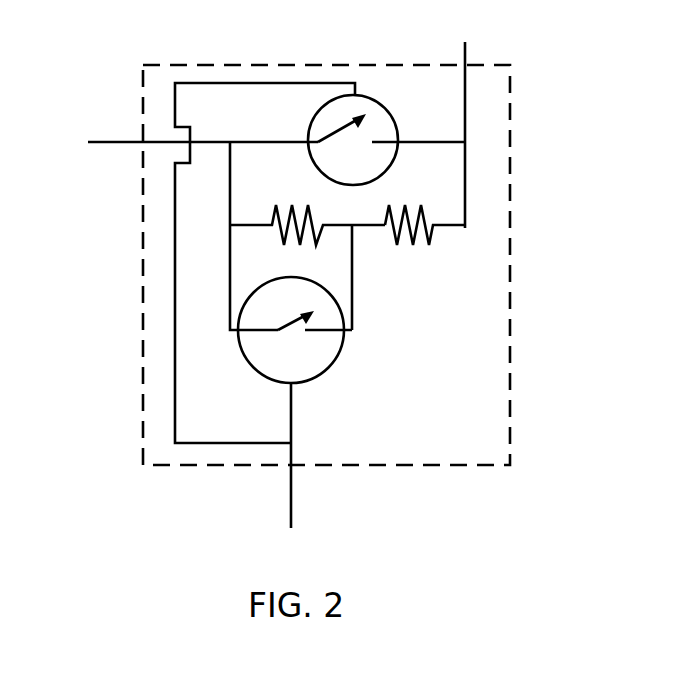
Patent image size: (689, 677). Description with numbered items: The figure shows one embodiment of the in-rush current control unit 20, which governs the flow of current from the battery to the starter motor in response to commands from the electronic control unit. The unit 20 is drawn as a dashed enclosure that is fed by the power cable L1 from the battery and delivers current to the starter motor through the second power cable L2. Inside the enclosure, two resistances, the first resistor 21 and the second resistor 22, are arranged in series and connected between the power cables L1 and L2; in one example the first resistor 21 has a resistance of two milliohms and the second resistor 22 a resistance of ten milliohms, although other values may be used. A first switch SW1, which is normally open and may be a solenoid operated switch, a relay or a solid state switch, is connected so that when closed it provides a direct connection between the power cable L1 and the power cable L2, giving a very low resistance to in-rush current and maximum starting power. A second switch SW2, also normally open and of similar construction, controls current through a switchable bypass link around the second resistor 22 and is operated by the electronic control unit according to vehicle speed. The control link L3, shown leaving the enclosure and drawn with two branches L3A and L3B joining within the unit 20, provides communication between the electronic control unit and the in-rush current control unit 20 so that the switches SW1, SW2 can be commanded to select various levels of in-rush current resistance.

The in-rush current control unit 20 is at (142, 60).
The first resistor 21 is at (428, 225).
The second resistor 22 is at (280, 230).
The power cable L1 is at (97, 140).
The second power cable L2 is at (468, 48).
The control link L3 is at (287, 495).
The third line first branch L3A is at (175, 380).
The third line second branch L3B is at (293, 408).
The first switch SW1 is at (382, 100).
The second switch SW2 is at (347, 348).